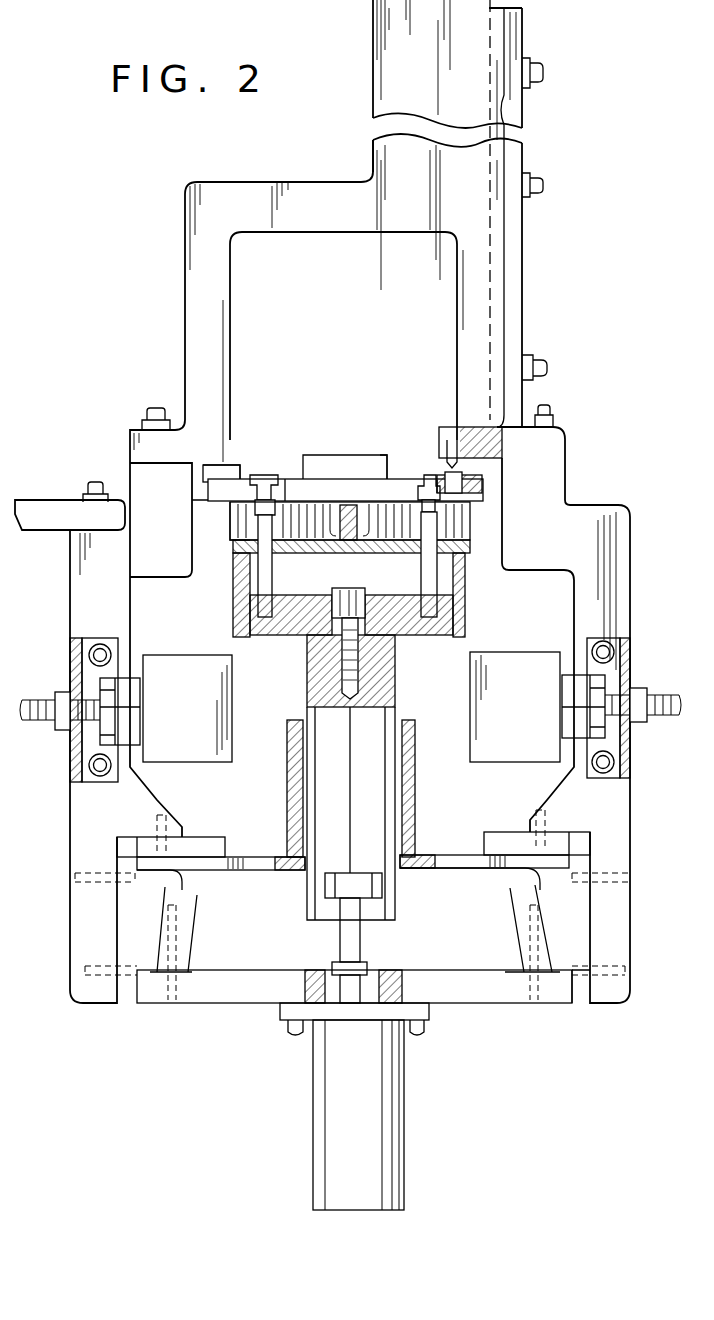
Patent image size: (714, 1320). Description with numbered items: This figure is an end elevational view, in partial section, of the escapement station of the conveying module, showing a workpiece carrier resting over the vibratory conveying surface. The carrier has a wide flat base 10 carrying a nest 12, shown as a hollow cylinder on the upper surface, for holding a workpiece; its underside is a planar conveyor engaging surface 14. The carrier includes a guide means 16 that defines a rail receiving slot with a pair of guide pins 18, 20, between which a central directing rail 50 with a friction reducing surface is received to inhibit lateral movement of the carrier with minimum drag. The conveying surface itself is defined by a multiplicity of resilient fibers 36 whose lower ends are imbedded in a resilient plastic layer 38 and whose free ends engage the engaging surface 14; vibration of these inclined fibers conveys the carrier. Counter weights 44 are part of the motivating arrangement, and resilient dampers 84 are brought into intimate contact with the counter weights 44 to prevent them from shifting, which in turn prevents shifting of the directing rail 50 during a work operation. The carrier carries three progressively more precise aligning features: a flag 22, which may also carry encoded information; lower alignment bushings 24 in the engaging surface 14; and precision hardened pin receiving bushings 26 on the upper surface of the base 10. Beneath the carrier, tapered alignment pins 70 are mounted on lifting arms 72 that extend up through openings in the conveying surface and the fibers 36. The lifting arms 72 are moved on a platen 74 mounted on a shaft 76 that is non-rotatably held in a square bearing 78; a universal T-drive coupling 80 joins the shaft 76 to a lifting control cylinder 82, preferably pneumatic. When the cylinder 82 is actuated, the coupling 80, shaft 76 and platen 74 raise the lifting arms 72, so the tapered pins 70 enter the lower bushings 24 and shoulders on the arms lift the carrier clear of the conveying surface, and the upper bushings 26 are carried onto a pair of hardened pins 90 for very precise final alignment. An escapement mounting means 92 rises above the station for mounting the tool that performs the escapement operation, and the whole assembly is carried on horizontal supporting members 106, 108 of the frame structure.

The base 10 is at (345, 490).
The nest 12 is at (325, 465).
The conveyor engaging surface 14 is at (232, 512).
The guide means 16 is at (368, 465).
The guide pin 18 is at (327, 540).
The guide pin 20 is at (365, 540).
The flag 22 is at (213, 472).
The lower alignment bushings 24 is at (287, 478).
The pin receiving bushings 26 is at (484, 483).
The fibers 36 is at (235, 530).
The resilient plastic layer 38 is at (238, 546).
The counter weight 44 is at (212, 745).
The directing rail 50 is at (347, 545).
The tapered alignment pins 70 is at (252, 492).
The lifting arms 72 is at (262, 575).
The platen 74 is at (292, 625).
The shaft 76 is at (351, 769).
The square bearing 78 is at (416, 800).
The T-drive coupling 80 is at (363, 887).
The lifting control cylinder 82 is at (370, 1080).
The resilient dampers 84 is at (127, 700).
The hardened pins 90 is at (455, 440).
The escapement mounting means 92 is at (503, 276).
The horizontal supporting member 106 is at (267, 970).
The horizontal supporting member 108 is at (155, 875).